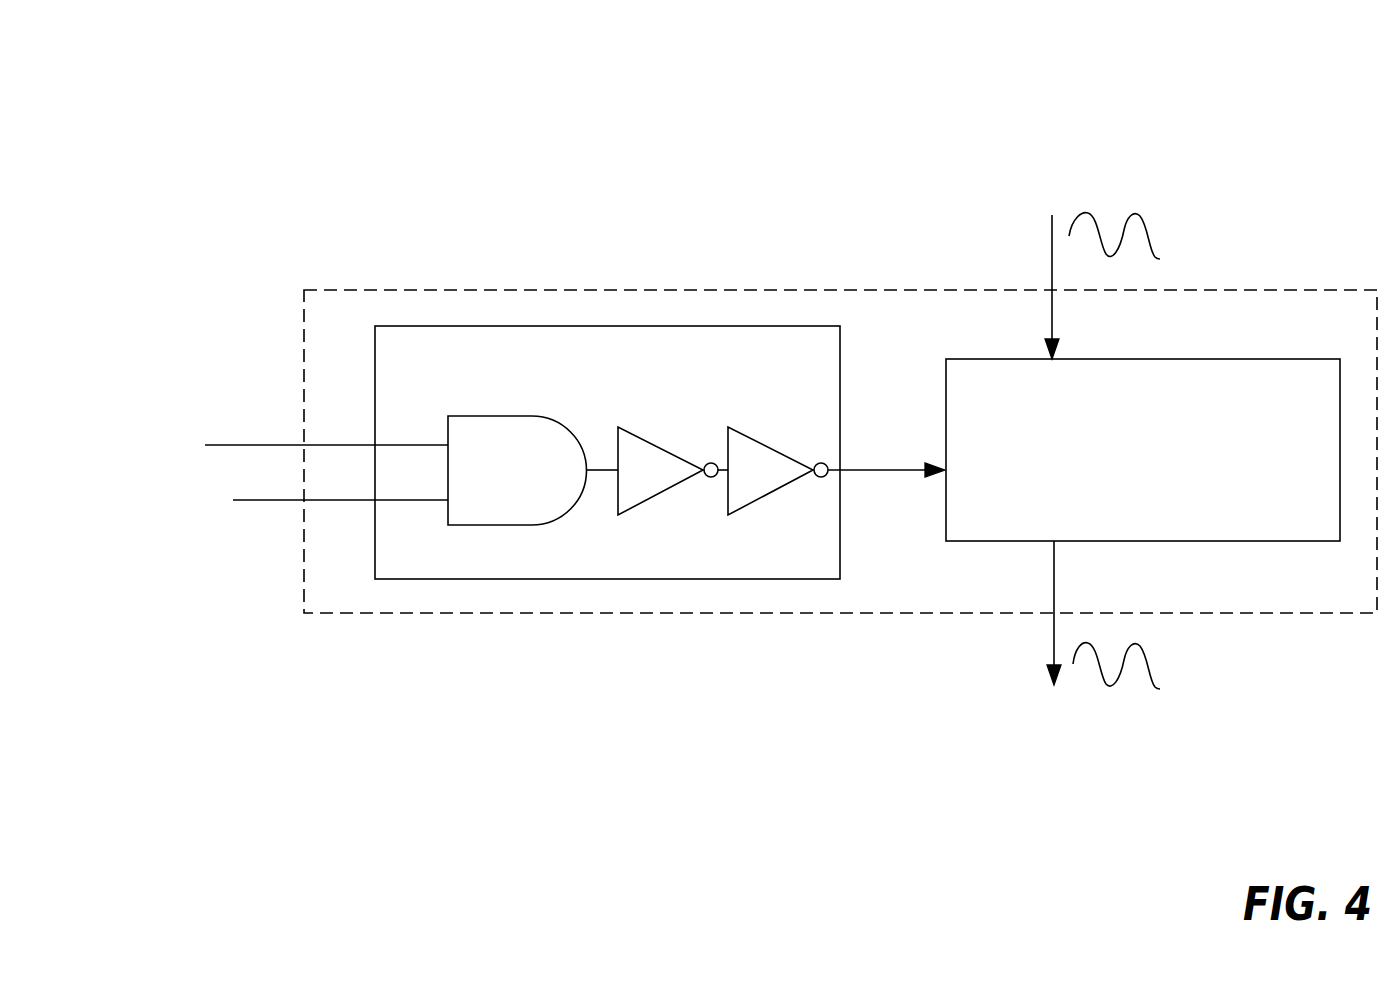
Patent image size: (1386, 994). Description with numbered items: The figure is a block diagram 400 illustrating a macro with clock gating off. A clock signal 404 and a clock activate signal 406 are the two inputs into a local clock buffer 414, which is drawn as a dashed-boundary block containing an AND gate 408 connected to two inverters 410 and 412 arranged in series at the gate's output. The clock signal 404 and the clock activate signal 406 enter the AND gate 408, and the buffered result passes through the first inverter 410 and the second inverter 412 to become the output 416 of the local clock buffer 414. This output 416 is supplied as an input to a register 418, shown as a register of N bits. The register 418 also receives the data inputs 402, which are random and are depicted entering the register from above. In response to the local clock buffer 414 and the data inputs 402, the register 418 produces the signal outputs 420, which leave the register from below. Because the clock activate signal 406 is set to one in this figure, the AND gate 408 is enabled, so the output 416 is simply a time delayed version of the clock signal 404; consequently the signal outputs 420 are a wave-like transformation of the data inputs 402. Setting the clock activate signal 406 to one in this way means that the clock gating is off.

The block diagram illustrating a macro with clock gating off 400 is at (1247, 124).
The data inputs 402 is at (1051, 240).
The clock signal 404 is at (287, 442).
The clock activate signal 406 is at (277, 497).
The AND gate 408 is at (539, 482).
The inverter 410 is at (667, 484).
The inverter 412 is at (784, 484).
The local clock buffer 414 is at (627, 396).
The output of the local clock buffer 416 is at (900, 468).
The register 418 is at (1163, 476).
The signal outputs 420 is at (1053, 660).